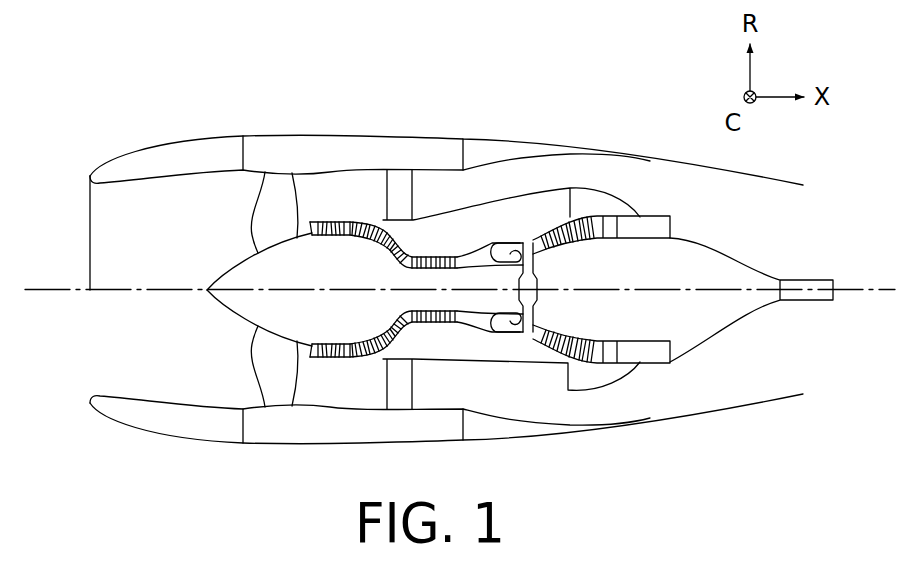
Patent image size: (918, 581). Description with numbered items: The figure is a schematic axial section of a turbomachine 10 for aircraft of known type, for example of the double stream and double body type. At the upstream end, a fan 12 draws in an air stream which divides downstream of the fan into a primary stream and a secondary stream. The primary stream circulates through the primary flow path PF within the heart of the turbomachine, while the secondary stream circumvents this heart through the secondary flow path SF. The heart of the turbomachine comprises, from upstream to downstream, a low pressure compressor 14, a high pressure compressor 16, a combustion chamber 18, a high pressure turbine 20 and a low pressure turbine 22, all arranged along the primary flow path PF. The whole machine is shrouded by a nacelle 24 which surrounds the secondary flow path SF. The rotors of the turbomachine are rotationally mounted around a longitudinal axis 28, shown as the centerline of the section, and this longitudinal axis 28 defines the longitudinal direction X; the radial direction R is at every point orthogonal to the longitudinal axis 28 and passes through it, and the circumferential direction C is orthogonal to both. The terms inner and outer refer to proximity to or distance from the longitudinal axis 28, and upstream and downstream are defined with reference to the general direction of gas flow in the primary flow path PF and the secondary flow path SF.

The turbomachine 10 is at (246, 96).
The fan 12 is at (267, 360).
The low pressure compressor 14 is at (333, 222).
The high pressure compressor 16 is at (446, 252).
The combustion chamber 18 is at (503, 241).
The high pressure turbine 20 is at (531, 240).
The low pressure turbine 22 is at (595, 213).
The nacelle 24 is at (360, 148).
The longitudinal axis 28 is at (35, 287).
The secondary flow path SF is at (333, 390).
The primary flow path PF is at (400, 327).